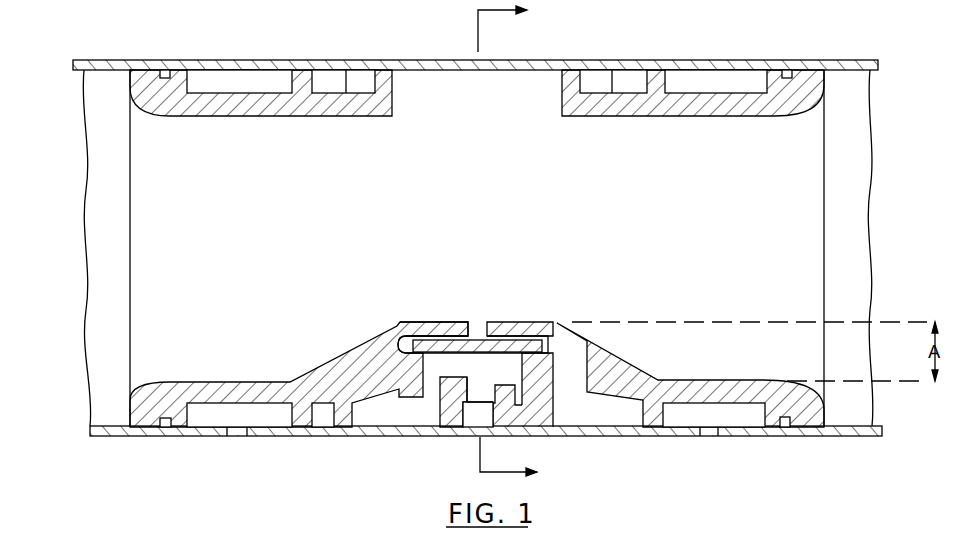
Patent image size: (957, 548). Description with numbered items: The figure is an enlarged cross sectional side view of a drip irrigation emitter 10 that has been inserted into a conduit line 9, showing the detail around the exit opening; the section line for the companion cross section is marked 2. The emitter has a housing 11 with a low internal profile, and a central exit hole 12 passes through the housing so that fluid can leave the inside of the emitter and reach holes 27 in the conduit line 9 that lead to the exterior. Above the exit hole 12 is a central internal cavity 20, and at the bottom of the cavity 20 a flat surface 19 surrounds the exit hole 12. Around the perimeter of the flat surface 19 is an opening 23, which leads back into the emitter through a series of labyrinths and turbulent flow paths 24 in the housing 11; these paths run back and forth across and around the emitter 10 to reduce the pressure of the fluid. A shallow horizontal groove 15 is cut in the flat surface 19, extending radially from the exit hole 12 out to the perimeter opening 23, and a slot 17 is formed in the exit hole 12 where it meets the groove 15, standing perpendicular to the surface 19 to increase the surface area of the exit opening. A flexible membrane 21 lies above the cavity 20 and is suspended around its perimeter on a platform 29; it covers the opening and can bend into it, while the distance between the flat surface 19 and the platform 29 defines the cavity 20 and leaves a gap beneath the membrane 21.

The section line 2- 2 is at (516, 243).
The conduit line 9 is at (712, 65).
The drip irrigation emitter 10 is at (180, 145).
The housing 11 is at (513, 418).
The central exit hole 12 is at (470, 417).
The shallow horizontal groove 15 is at (548, 358).
The slot 17 is at (490, 388).
The flat surface 19 is at (440, 360).
The central internal cavity 20 is at (437, 372).
The flexible membrane 21 is at (495, 345).
The opening 23 is at (520, 388).
The labyrinths and turbulent flow paths 24 is at (363, 88).
The holes 27 is at (237, 435).
The platform 29 is at (548, 330).